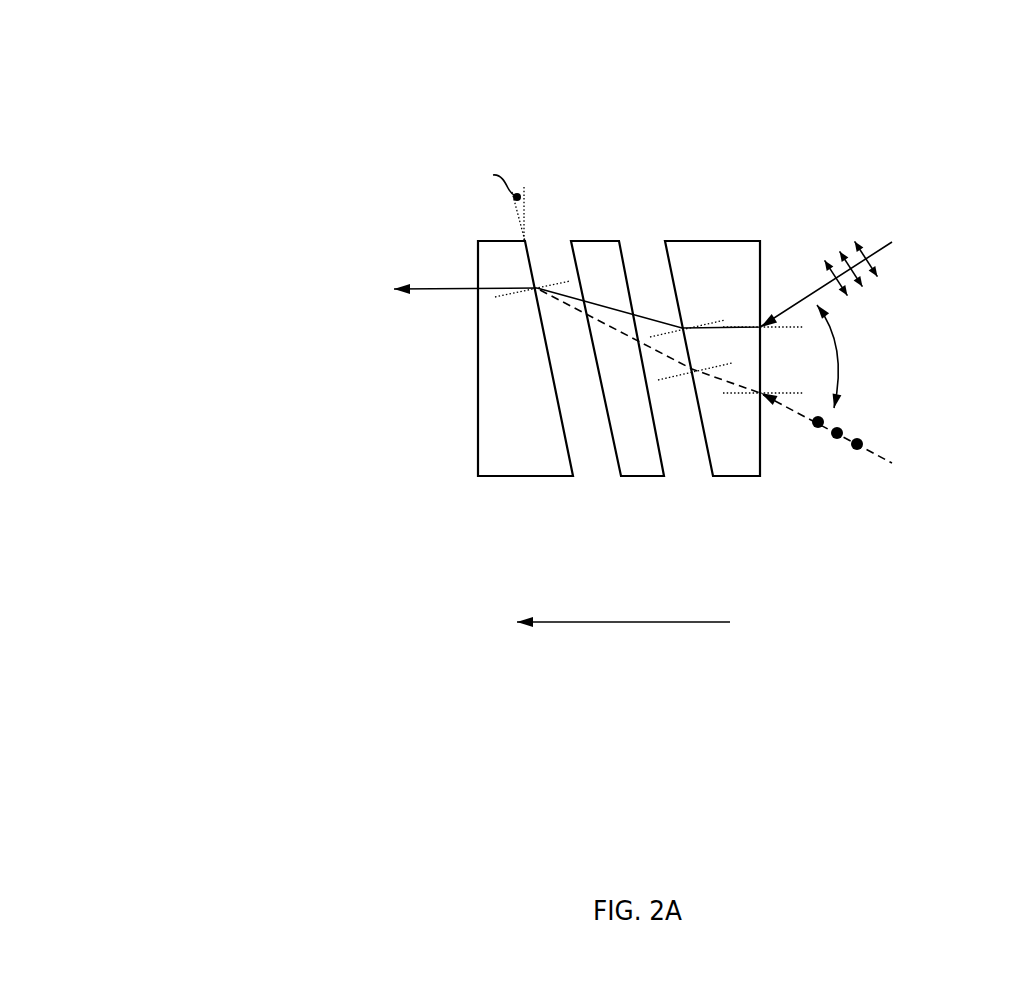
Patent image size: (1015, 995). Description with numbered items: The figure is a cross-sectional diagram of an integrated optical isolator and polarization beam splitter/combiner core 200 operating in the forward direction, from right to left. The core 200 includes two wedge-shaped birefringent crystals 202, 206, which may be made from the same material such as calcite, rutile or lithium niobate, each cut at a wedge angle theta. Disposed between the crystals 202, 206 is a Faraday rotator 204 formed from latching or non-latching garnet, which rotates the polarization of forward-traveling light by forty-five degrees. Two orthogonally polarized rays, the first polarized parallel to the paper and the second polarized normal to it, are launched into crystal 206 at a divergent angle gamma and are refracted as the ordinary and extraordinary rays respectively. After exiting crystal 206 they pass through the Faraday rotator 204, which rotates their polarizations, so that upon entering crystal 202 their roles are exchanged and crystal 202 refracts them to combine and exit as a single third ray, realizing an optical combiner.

The integrated optical isolator and polarization beam splitter/combiner core 200 is at (104, 48).
The birefringent crystal 202 is at (480, 482).
The Faraday rotator 204 is at (625, 482).
The birefringent crystal 206 is at (720, 483).